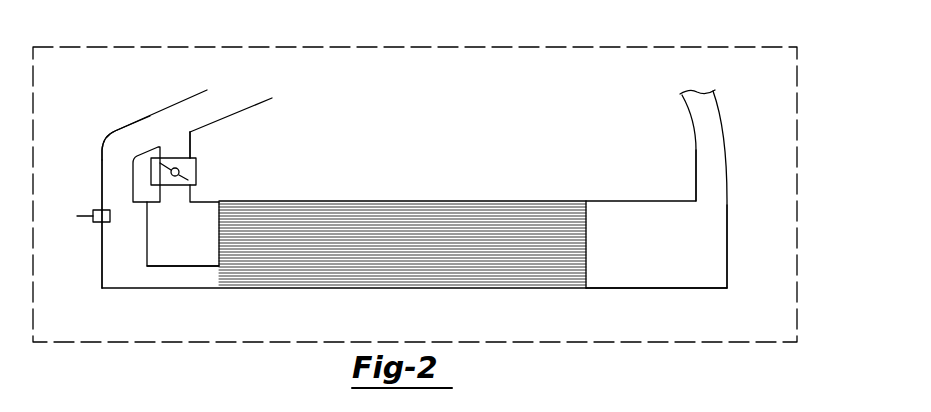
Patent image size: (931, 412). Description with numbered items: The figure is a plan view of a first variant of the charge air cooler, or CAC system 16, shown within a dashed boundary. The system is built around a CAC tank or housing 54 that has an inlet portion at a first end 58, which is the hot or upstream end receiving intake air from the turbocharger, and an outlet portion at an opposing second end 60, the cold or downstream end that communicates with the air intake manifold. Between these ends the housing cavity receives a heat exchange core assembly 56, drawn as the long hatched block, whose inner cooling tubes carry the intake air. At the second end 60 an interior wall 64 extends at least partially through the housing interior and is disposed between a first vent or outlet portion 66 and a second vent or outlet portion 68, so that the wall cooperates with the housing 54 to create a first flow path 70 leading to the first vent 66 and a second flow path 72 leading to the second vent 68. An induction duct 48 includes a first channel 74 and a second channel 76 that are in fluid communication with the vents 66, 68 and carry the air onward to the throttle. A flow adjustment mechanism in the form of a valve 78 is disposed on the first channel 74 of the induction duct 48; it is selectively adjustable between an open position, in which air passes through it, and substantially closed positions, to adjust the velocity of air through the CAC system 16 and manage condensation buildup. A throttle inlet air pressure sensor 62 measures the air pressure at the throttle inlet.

The CAC system 16 is at (701, 46).
The induction duct 48 is at (225, 103).
The housing 54 is at (635, 289).
The heat exchange core assembly 56 is at (463, 213).
The first end 58 is at (727, 237).
The second end 60 is at (102, 273).
The throttle inlet air pressure sensor 62 is at (77, 216).
The interior wall 64 is at (160, 267).
The first vent 66 is at (178, 193).
The second vent 68 is at (117, 190).
The first flow path 70 is at (172, 246).
The second flow path 72 is at (113, 254).
The first channel 74 is at (175, 150).
The second channel 76 is at (122, 150).
The valve 78 is at (196, 163).